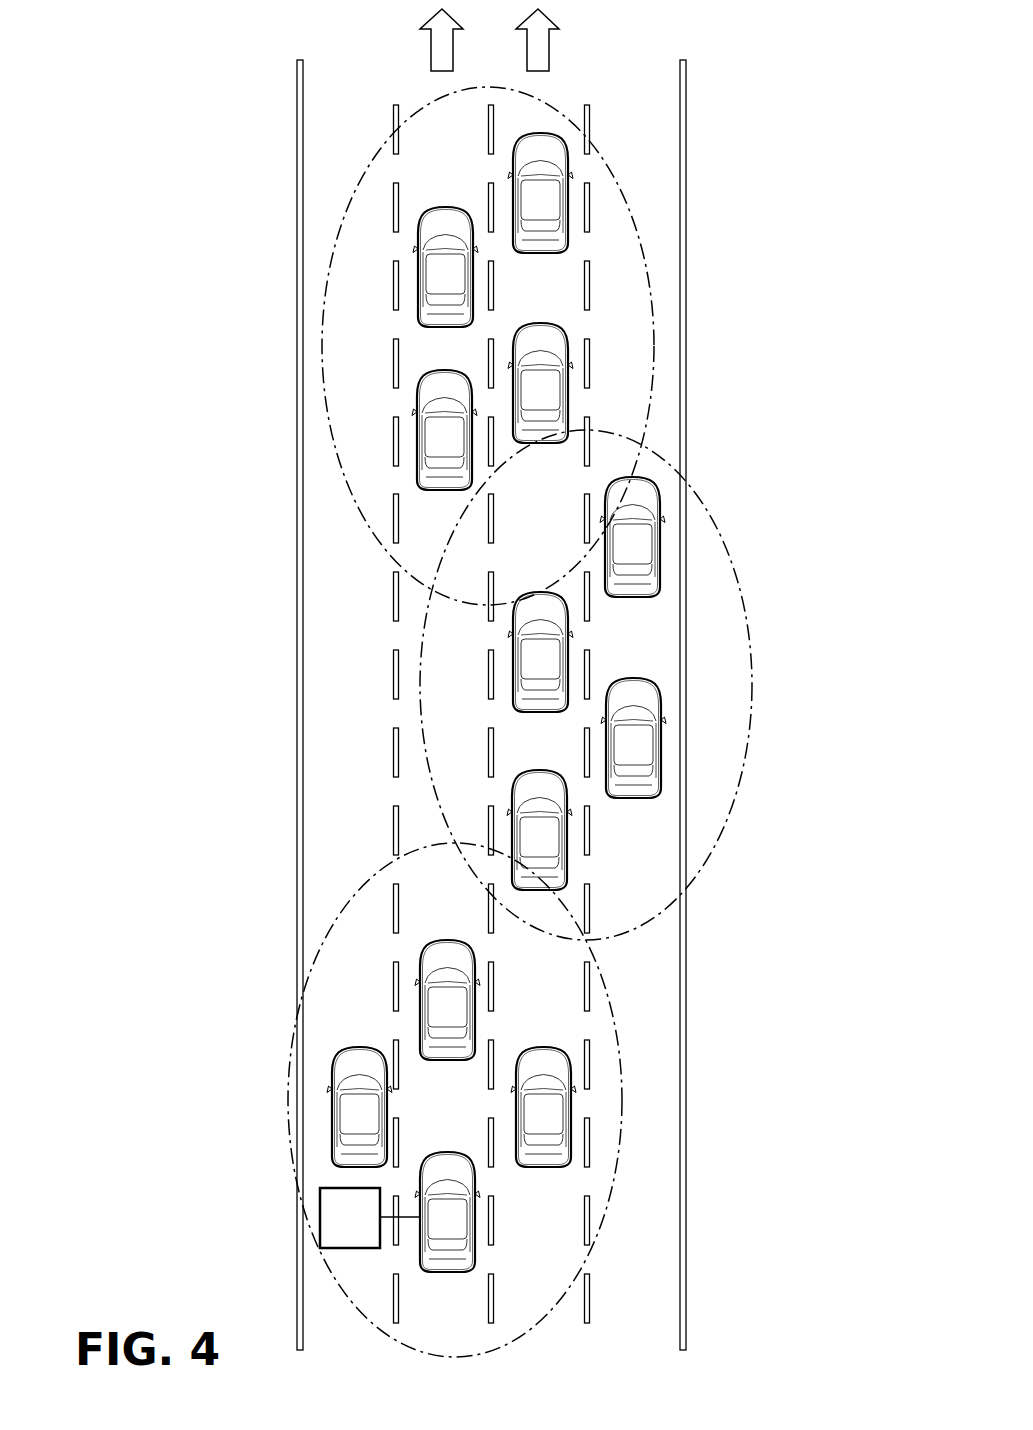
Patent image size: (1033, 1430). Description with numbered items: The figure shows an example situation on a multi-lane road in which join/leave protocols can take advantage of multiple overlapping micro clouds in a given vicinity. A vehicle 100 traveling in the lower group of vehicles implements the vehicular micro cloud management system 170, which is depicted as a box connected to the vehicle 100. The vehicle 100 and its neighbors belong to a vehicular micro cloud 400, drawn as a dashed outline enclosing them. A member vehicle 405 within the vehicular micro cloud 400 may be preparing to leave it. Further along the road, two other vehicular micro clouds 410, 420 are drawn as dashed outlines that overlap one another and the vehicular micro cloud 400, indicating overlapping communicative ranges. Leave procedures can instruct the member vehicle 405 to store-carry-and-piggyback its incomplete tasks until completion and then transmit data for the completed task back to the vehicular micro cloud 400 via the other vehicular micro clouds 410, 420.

The vehicle 100 is at (455, 1272).
The vehicular micro cloud management system 170 is at (333, 1229).
The vehicular micro cloud 400 is at (371, 878).
The member vehicle 405 is at (477, 1031).
The other vehicular micro cloud 410 is at (728, 552).
The other vehicular micro cloud 420 is at (651, 331).